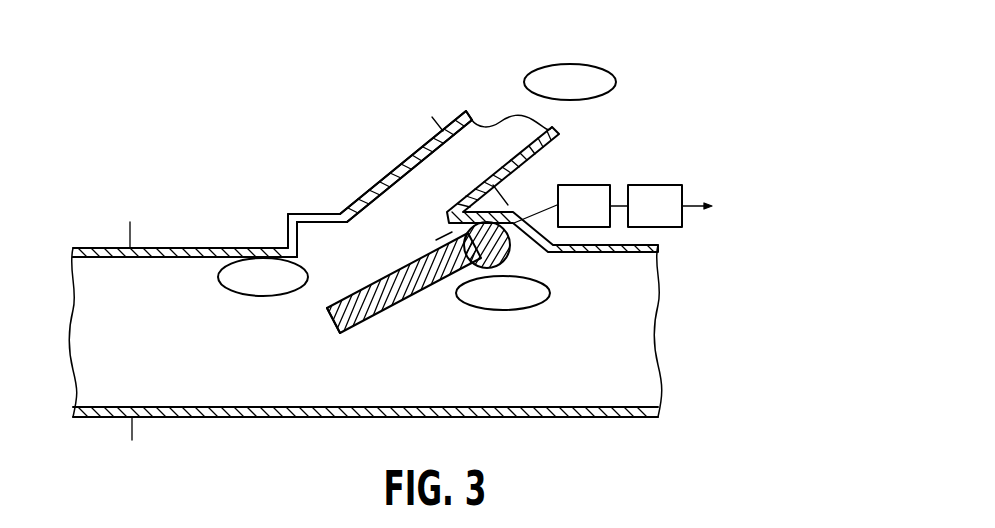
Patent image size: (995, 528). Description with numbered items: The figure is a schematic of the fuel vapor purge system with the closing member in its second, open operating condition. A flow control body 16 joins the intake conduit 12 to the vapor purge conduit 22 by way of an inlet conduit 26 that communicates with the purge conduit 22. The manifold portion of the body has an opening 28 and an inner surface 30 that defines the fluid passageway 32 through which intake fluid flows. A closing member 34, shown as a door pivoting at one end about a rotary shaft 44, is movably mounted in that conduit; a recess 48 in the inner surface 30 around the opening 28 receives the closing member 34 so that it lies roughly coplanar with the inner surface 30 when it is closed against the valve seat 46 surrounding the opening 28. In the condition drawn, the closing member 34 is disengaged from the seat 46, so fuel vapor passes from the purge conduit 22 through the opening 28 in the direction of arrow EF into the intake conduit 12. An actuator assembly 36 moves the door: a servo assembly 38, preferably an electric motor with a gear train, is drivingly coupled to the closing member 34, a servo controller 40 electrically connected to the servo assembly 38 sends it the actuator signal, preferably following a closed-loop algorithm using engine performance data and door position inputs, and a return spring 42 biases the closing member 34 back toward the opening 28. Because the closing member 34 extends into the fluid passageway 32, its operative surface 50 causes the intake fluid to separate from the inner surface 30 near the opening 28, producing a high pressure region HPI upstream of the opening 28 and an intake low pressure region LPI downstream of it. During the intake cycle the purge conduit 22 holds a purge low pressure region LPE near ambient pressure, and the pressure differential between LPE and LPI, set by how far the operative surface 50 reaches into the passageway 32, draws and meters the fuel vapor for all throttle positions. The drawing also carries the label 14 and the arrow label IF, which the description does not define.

The intake conduit 12 is at (97, 247).
The bypass duct wall 14 is at (197, 247).
The flow control body 16 is at (300, 140).
The vapor purge conduit 22 is at (448, 110).
The inlet conduit 26 is at (403, 163).
The opening 28 is at (378, 226).
The inner surface 30 is at (185, 258).
The fluid passageway 32 is at (222, 417).
The closing member 34 is at (327, 311).
The actuator assembly 36 is at (622, 170).
The servo assembly 38 is at (572, 218).
The servo controller 40 is at (643, 218).
The return spring 42 is at (436, 240).
The rotary shaft 44 is at (510, 251).
The valve seat 46 is at (447, 221).
The recess 48 is at (290, 213).
The operative surface 50 is at (398, 312).
The purge low pressure region LPE is at (567, 88).
The intake low pressure region LPI is at (258, 268).
The high pressure region HPI is at (503, 283).
The fuel vapor flow arrow EF is at (466, 157).
The inlet flow IF is at (177, 333).